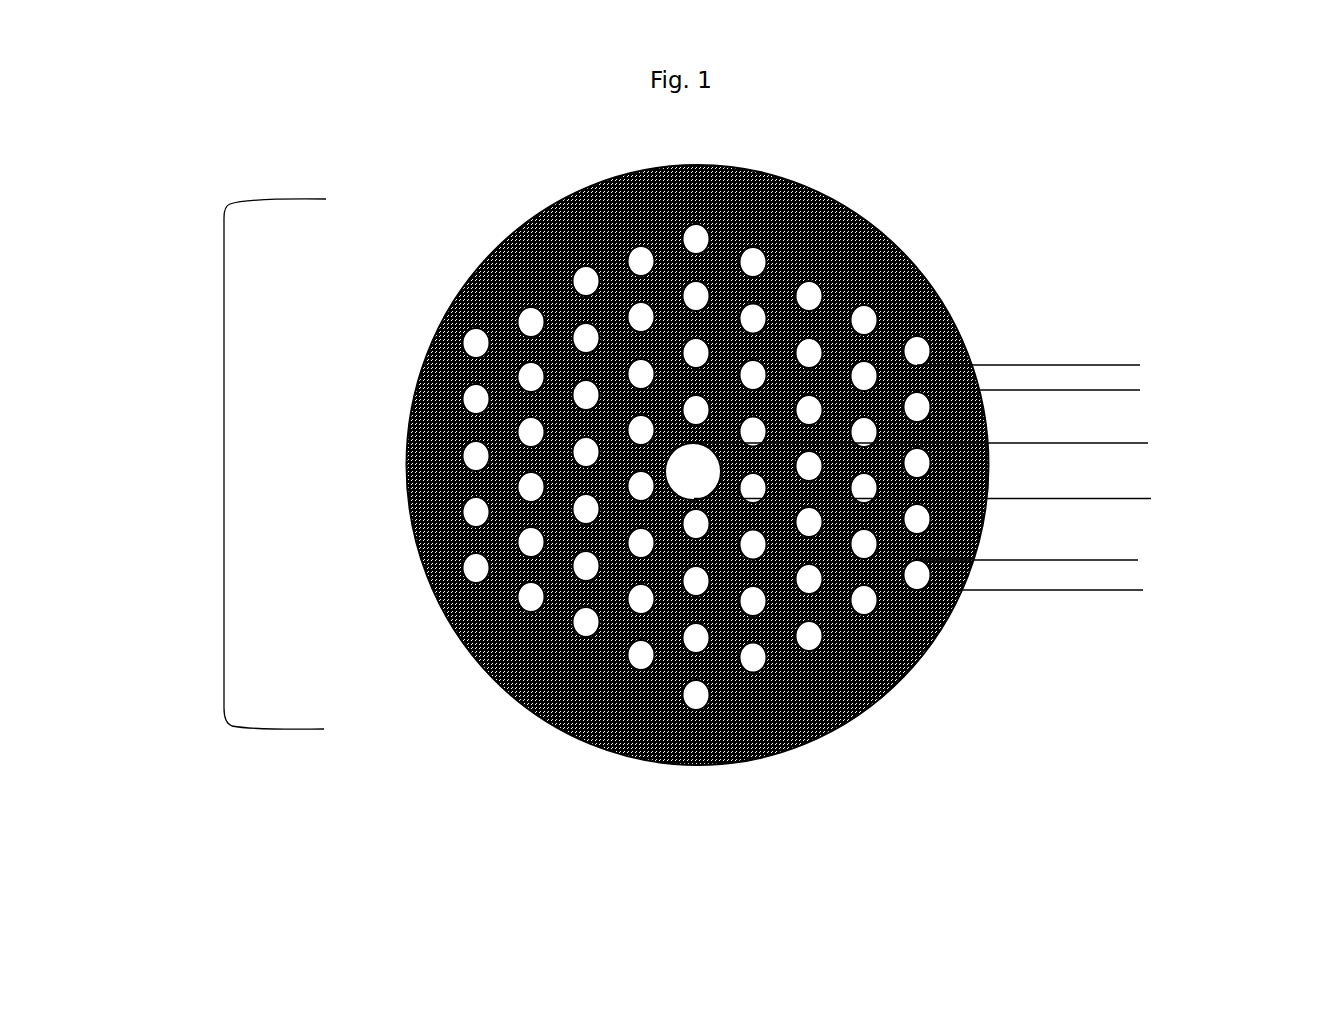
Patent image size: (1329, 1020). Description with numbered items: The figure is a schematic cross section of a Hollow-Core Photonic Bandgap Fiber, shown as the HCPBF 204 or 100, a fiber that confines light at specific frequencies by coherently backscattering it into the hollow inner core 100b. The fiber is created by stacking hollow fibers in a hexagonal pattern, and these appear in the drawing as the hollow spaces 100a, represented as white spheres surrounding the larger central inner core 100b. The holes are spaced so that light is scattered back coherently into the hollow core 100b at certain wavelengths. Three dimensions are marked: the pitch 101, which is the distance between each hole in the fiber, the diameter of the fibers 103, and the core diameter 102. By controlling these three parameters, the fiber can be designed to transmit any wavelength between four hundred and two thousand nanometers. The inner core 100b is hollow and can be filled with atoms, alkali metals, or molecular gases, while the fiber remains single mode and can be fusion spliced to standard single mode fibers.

The hollow-core photonic bandgap fiber 100 is at (752, 163).
The hollow spaces 100a is at (758, 240).
The inner core 100b is at (682, 462).
The pitch 101 is at (1045, 333).
The core diameter 102 is at (1107, 435).
The diameter of the fibers 103 is at (1033, 528).
The hollow-core photonic bandgap fiber 204 is at (216, 458).